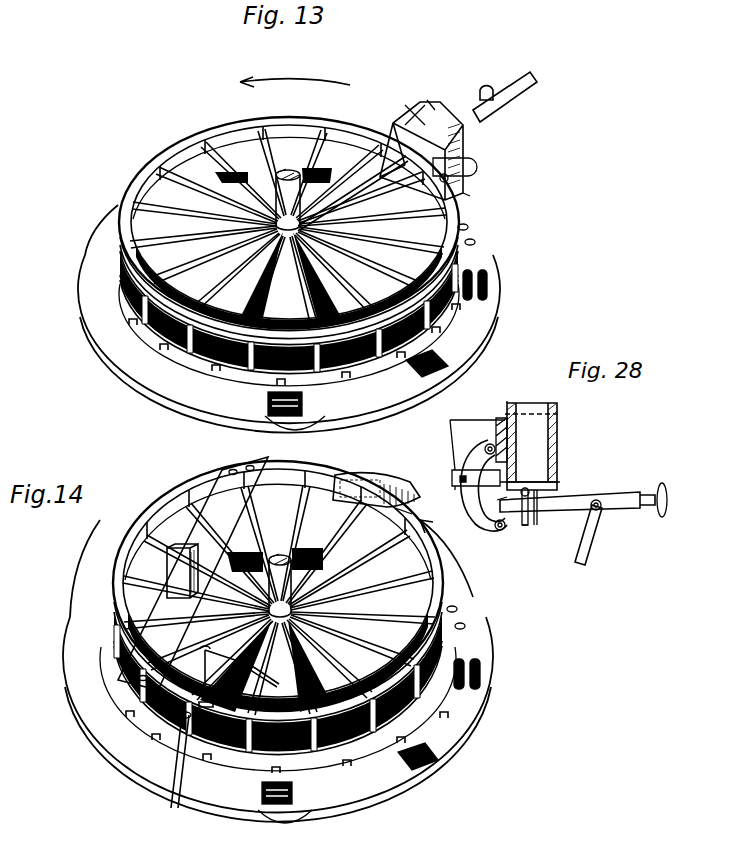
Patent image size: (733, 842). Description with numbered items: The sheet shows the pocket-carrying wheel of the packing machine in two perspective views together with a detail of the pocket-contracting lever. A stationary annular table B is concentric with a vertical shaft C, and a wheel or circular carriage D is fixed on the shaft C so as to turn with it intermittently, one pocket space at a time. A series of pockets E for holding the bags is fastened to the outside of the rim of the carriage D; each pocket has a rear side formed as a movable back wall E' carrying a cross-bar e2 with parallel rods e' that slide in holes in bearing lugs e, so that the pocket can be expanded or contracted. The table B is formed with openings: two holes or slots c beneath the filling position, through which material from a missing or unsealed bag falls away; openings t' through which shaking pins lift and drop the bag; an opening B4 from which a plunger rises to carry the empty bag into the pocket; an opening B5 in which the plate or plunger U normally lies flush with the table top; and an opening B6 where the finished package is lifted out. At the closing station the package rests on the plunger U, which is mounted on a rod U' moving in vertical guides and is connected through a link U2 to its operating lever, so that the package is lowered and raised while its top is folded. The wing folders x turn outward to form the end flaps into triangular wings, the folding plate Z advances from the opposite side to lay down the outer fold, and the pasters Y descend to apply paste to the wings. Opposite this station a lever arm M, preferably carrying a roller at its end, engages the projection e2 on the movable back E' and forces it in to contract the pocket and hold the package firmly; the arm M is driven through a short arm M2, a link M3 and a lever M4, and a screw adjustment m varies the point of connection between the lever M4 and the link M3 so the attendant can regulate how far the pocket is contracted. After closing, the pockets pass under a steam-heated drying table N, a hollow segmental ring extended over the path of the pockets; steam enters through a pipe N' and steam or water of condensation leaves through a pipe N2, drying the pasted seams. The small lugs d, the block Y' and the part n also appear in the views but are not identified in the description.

In FIG. 13, the stationary horizontal table B is at (492, 312).
In FIG. 14, the stationary horizontal table B is at (68, 698).
In FIG. 28, the stationary horizontal table B is at (556, 484).
In FIG. 13, the wheel or circular carriage D is at (118, 212).
In FIG. 14, the wheel or circular carriage D is at (190, 538).
In FIG. 28, the wheel or circular carriage D is at (477, 453).
In FIG. 13, the vertical shaft C is at (290, 170).
In FIG. 14, the vertical shaft C is at (283, 556).
In FIG. 13, the pasters Y is at (379, 147).
In FIG. 13, the pocket E is at (434, 151).
In FIG. 14, the pocket E is at (422, 513).
In FIG. 28, the pocket E is at (544, 446).
In FIG. 13, the wing folders x is at (427, 100).
In FIG. 13, the parallel rods e' is at (472, 164).
In FIG. 13, the bearing lugs e is at (466, 184).
In FIG. 13, the folding plate Z is at (498, 99).
In FIG. 13, the opening in table B5 is at (470, 196).
In FIG. 13, the openings in table t' is at (493, 234).
In FIG. 14, the openings in table t' is at (477, 608).
In FIG. 13, the holes or slots c is at (488, 285).
In FIG. 14, the holes or slots c is at (482, 675).
In FIG. 13, the lugs d is at (132, 326).
In FIG. 14, the lugs d is at (126, 716).
In FIG. 28, the lugs d is at (452, 478).
In FIG. 13, the opening in table B4 is at (432, 372).
In FIG. 14, the opening in table B4 is at (428, 766).
In FIG. 13, the opening in table B6 is at (270, 408).
In FIG. 14, the opening in table B6 is at (266, 804).
In FIG. 14, the steam inlet pipe N' is at (160, 573).
In FIG. 14, the block Y' is at (191, 559).
In FIG. 14, the steam-heated drying table N is at (376, 482).
In FIG. 14, the crank n is at (239, 666).
In FIG. 14, the steam outlet pipe N2 is at (172, 803).
In FIG. 28, the movable back wall E' is at (501, 392).
In FIG. 28, the cross-bar e2 is at (496, 440).
In FIG. 28, the short arm M2 is at (540, 472).
In FIG. 28, the lever arm M is at (486, 509).
In FIG. 28, the link M3 is at (584, 500).
In FIG. 28, the screw adjustment m is at (656, 494).
In FIG. 28, the lever M4 is at (592, 555).
In FIG. 28, the plate or plunger U is at (545, 514).
In FIG. 28, the plunger rod U' is at (547, 526).
In FIG. 28, the link U2 is at (526, 530).